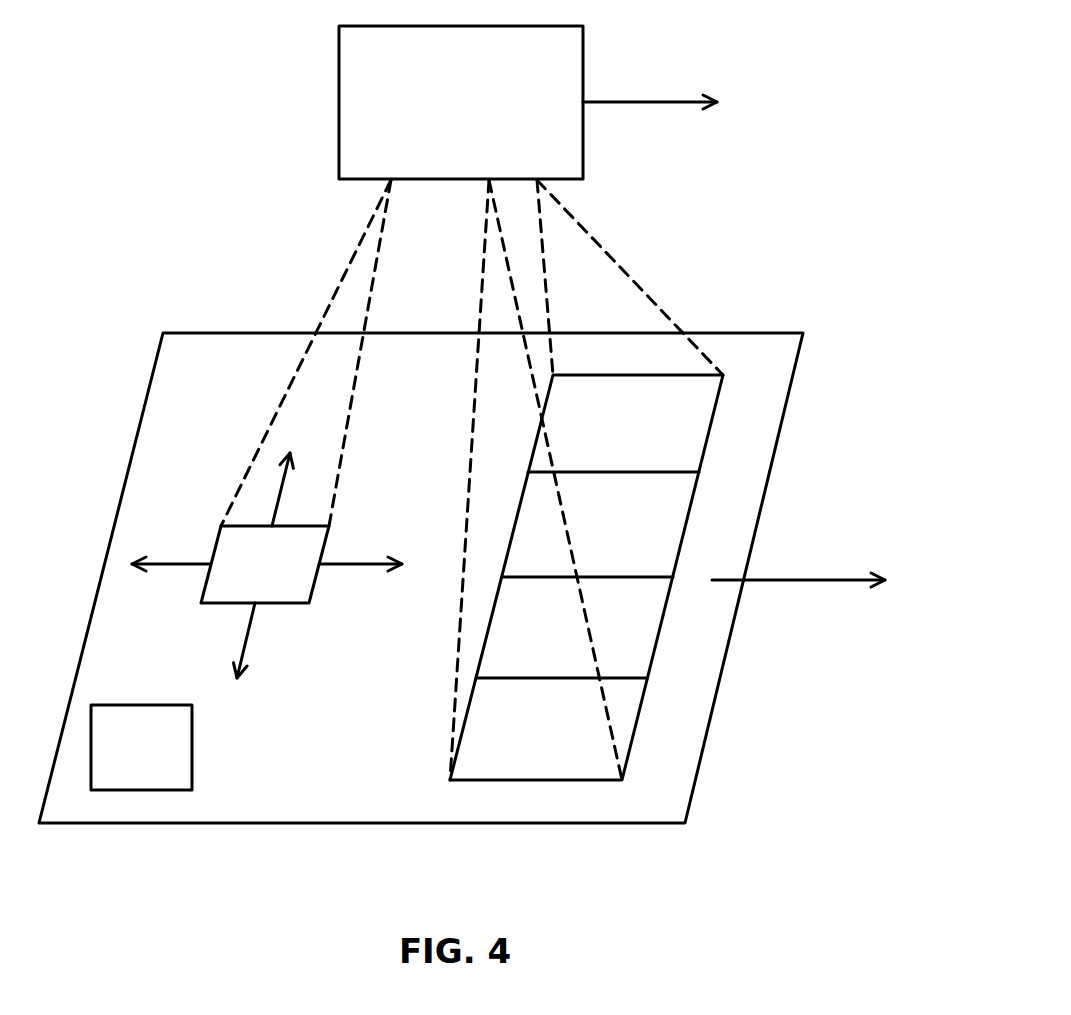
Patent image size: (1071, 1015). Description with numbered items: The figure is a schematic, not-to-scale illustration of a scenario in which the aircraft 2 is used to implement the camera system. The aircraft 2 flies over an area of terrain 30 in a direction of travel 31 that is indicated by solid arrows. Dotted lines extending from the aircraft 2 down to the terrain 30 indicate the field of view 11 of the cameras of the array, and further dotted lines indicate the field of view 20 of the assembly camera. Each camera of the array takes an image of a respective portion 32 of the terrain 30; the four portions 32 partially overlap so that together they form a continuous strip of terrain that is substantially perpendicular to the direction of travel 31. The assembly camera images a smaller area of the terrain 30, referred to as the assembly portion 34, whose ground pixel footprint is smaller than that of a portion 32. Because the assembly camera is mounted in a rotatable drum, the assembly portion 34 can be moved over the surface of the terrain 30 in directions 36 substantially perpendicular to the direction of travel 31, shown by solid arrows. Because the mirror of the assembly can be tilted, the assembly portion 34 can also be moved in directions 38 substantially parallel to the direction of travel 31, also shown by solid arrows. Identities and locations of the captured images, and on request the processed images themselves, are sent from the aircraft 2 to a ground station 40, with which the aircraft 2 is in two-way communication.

The aircraft 2 is at (449, 116).
The field of view of the cameras 11 is at (480, 290).
The field of view of the assembly camera 20 is at (332, 298).
The area of terrain 30 is at (754, 342).
The direction of travel 31 is at (638, 102).
The respective portions of terrain 32 is at (605, 441).
The assembly portion 34 is at (247, 578).
The directions of movement perpendicular to direction of travel 36 is at (283, 488).
The directions of movement parallel to direction of travel 38 is at (187, 564).
The ground station 40 is at (123, 762).